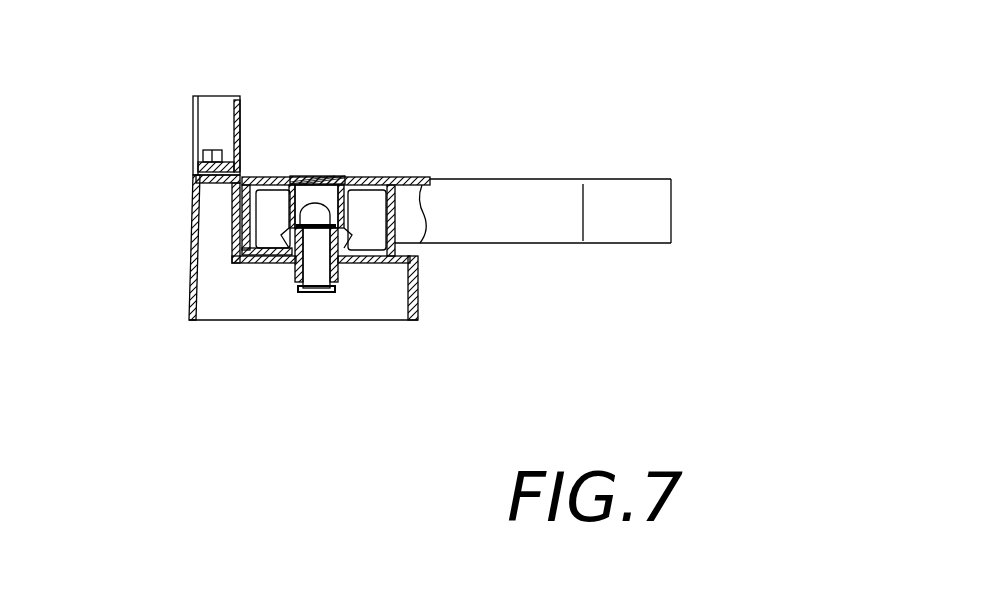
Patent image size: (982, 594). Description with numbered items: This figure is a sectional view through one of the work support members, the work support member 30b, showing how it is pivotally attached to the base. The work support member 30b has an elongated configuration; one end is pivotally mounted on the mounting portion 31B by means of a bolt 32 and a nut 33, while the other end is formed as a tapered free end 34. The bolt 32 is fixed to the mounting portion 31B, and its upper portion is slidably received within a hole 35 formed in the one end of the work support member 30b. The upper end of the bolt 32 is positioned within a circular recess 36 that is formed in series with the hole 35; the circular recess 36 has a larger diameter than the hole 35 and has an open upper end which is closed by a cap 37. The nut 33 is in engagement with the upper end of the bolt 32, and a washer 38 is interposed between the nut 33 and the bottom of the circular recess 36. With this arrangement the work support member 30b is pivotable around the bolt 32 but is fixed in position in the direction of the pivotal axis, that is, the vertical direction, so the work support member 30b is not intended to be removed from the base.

The work support member 30b is at (495, 179).
The mounting portion 31B is at (190, 265).
The bolt 32 is at (302, 290).
The nut 33 is at (323, 177).
The tapered free end 34 is at (655, 225).
The hole 35 is at (290, 262).
The circular recess 36 is at (304, 187).
The cap 37 is at (309, 177).
The washer 38 is at (340, 177).